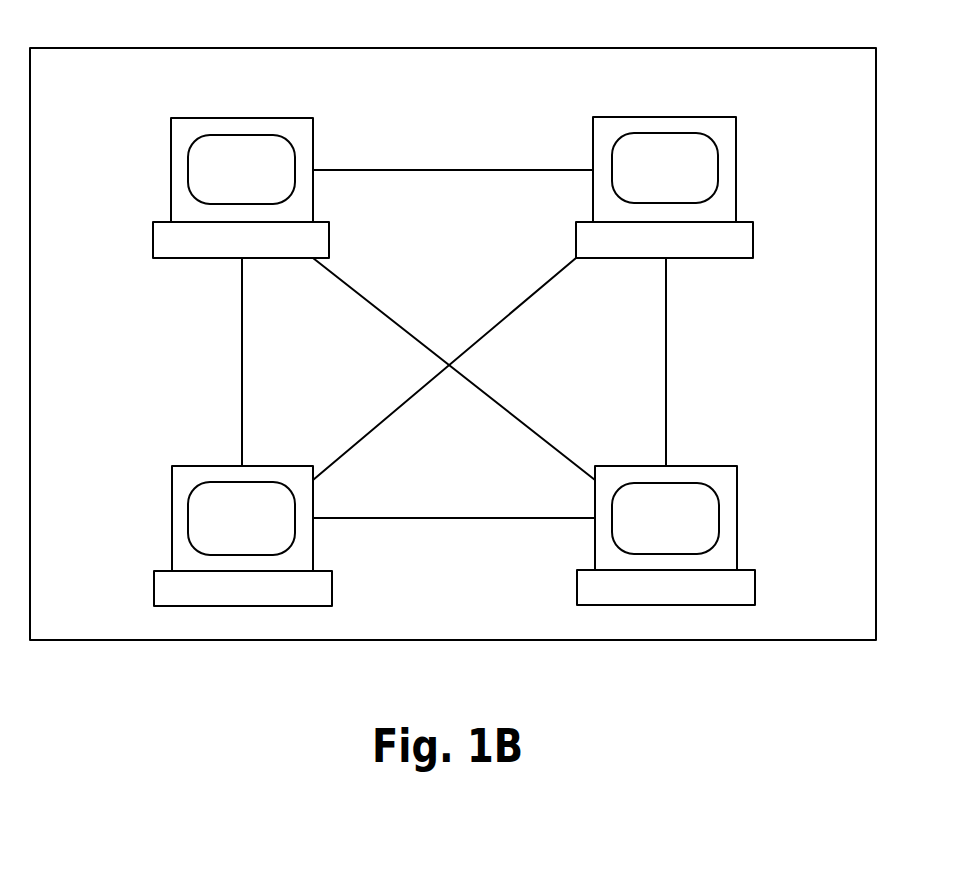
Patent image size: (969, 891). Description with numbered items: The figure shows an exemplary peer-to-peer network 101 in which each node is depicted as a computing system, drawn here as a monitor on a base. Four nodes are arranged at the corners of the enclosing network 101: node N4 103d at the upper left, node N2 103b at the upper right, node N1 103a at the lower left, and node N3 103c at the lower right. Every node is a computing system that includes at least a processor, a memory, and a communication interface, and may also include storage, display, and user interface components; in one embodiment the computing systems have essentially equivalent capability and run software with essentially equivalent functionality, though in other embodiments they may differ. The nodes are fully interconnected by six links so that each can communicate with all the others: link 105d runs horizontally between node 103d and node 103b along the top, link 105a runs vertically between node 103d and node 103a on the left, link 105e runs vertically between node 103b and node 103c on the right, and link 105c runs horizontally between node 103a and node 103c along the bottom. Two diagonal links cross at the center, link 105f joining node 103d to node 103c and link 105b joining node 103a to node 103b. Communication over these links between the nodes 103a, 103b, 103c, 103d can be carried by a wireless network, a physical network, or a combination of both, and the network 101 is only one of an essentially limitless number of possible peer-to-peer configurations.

The P2P network 101 is at (523, 48).
The node N1 103a is at (172, 482).
The node N2 103b is at (737, 133).
The node N3 103c is at (737, 482).
The node N4 103d is at (172, 133).
The link 105a is at (242, 378).
The link 105b is at (389, 417).
The link 105c is at (472, 518).
The link 105d is at (438, 170).
The link 105e is at (666, 328).
The link 105f is at (375, 304).